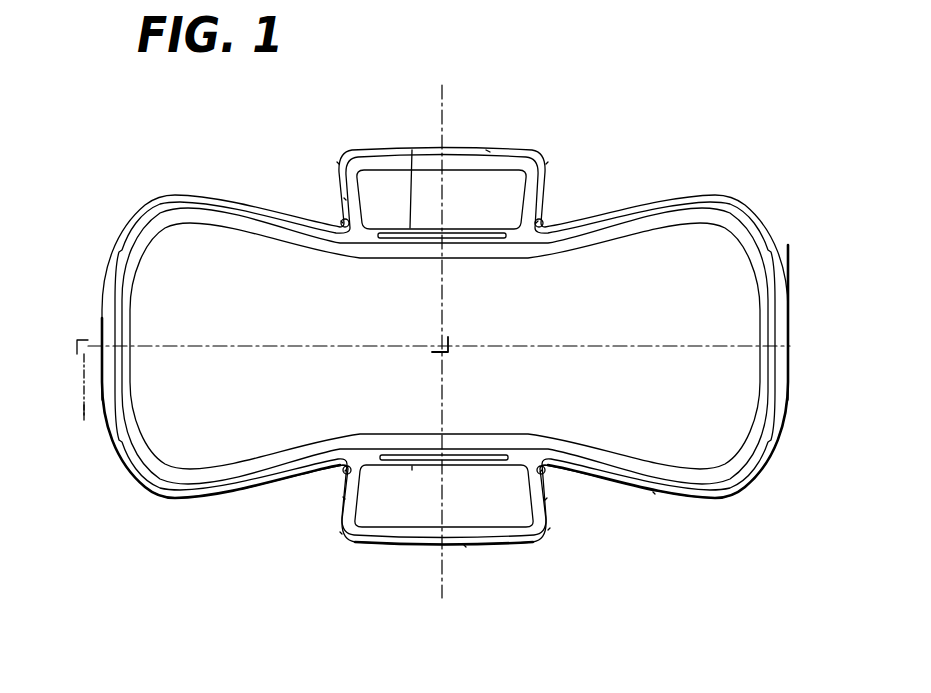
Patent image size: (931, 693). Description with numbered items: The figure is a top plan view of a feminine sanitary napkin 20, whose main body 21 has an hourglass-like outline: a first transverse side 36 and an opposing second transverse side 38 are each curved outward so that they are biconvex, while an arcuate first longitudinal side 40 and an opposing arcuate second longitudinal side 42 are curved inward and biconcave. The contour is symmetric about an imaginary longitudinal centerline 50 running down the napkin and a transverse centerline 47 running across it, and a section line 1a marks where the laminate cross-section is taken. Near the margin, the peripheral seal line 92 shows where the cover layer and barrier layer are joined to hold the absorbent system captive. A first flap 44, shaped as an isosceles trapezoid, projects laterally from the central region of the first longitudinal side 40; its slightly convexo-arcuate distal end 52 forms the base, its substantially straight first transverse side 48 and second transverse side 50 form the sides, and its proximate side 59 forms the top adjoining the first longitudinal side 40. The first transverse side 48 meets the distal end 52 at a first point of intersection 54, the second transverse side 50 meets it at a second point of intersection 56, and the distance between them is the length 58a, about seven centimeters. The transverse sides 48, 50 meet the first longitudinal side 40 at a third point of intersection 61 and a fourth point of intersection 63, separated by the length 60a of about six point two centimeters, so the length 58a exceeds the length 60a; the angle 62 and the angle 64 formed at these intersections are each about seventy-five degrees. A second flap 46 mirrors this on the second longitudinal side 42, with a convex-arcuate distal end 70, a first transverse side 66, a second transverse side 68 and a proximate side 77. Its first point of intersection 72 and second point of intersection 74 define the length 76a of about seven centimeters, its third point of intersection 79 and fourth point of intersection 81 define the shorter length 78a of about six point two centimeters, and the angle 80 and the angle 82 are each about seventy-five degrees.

The section line 1a is at (76, 412).
The feminine sanitary napkin 20 is at (168, 126).
The main body 21 is at (493, 334).
The first transverse side 36 is at (789, 328).
The second transverse side 38 is at (100, 328).
The first longitudinal side 40 is at (645, 203).
The second longitudinal side 42 is at (653, 492).
The first flap 44 is at (459, 138).
The second flap 46 is at (419, 562).
The transverse centerline 47 is at (446, 353).
The first transverse side of first flap 48 is at (344, 198).
The longitudinal centerline 50 is at (72, 346).
The distal end of first flap 52 is at (488, 150).
The first point of intersection 54 is at (337, 162).
The second point of intersection 56 is at (548, 162).
The length of first line 58a is at (543, 156).
The proximate side of first flap 59 is at (412, 150).
The length of second line 60a is at (527, 150).
The third point of intersection 61 is at (341, 221).
The angle 62 is at (336, 228).
The fourth point of intersection 63 is at (538, 221).
The angle 64 is at (546, 228).
The first transverse side of second flap 66 is at (547, 498).
The second transverse side of second flap 68 is at (343, 497).
The distal end of second flap 70 is at (464, 545).
The first point of intersection of second flap 72 is at (550, 528).
The second point of intersection of second flap 74 is at (340, 532).
The length of first line of second flap 76a is at (342, 535).
The proximate side of second flap 77 is at (412, 466).
The length of second line of second flap 78a is at (358, 532).
The third point of intersection of second flap 79 is at (540, 472).
The angle 80 is at (540, 471).
The fourth point of intersection of second flap 81 is at (345, 471).
The angle 82 is at (345, 470).
The peripheral seal line 92 is at (770, 358).